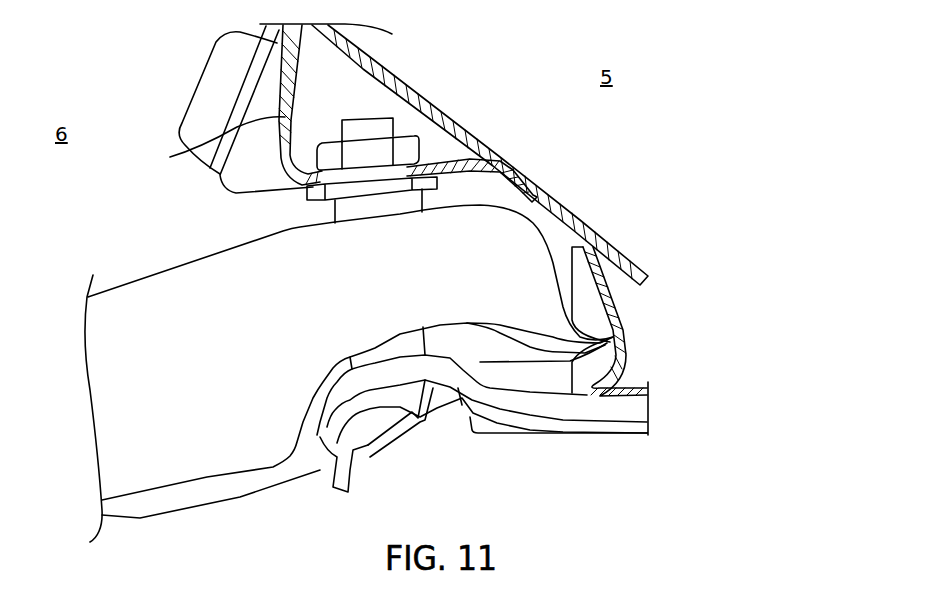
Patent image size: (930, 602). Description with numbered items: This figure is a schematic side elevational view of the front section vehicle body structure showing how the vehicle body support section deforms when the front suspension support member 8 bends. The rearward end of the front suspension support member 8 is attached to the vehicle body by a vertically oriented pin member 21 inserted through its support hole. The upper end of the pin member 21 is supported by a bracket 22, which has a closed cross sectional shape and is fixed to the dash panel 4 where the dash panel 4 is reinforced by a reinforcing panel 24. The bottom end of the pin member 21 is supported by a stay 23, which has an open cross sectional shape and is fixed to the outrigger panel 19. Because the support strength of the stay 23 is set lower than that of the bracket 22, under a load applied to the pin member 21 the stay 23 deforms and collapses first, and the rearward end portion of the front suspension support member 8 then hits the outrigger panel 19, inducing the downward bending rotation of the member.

The dash panel 4 is at (436, 106).
The front suspension support member 8 is at (151, 309).
The outrigger panel 19 is at (622, 331).
The pin member 21 is at (357, 208).
The bracket 22 is at (187, 155).
The stay 23 is at (392, 418).
The reinforcing panel 24 is at (196, 100).